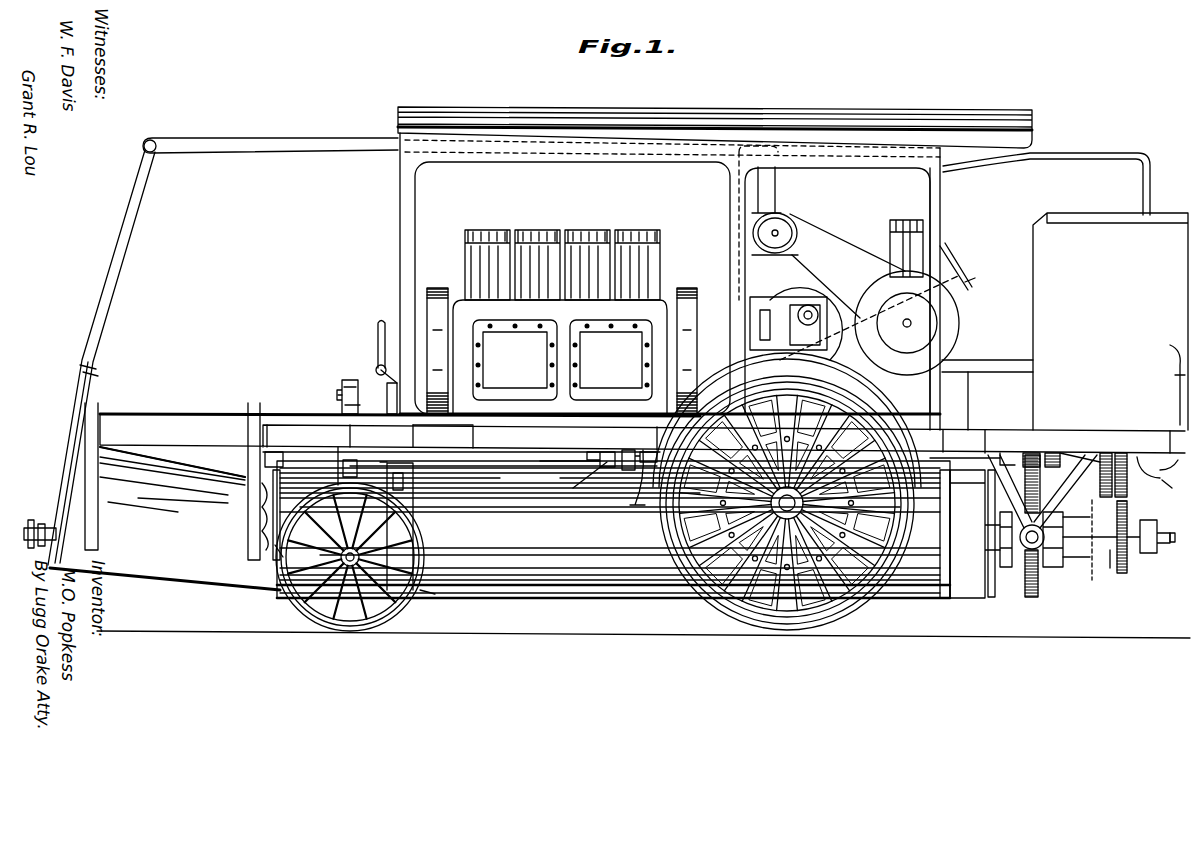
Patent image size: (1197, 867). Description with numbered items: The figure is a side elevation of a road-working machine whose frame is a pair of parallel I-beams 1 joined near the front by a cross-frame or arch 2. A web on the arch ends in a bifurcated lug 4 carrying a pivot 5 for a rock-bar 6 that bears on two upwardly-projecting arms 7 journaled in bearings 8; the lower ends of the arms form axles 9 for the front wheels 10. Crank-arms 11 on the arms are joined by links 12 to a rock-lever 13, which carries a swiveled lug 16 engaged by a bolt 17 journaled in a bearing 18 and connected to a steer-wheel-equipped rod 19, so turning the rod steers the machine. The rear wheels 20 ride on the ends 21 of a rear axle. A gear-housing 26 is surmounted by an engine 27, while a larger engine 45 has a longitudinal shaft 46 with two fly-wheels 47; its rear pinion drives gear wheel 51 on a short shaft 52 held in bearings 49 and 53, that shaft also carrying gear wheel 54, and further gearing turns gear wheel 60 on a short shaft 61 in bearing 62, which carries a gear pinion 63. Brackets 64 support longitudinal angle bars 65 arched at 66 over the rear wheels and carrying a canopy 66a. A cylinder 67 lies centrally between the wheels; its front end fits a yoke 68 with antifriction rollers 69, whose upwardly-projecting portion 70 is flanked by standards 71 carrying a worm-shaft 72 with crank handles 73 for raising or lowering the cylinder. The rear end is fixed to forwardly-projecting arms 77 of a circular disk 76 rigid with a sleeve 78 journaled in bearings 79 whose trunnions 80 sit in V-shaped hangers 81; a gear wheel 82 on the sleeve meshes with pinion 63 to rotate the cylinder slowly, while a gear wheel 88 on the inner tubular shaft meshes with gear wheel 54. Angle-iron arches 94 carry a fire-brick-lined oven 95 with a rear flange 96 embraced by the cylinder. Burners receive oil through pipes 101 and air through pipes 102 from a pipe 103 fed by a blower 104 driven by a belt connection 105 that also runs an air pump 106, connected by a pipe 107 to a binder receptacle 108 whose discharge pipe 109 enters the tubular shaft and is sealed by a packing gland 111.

The I-beams 1 is at (200, 432).
The cross-frame or arch 2 is at (340, 450).
The bifurcated lug 4 is at (345, 383).
The pivot 5 is at (338, 395).
The rock-bar 6 is at (348, 380).
The upwardly-projecting arms 7 is at (342, 406).
The bearings 8 is at (275, 557).
The axles 9 is at (292, 600).
The front wheels 10 is at (358, 632).
The crank-arms 11 is at (403, 482).
The links 12 is at (487, 473).
The rock-lever 13 is at (573, 488).
The swiveled lug 16 is at (608, 452).
The bolt 17 is at (570, 458).
The bearing 18 is at (635, 505).
The steer-wheel-equipped rod 19 is at (958, 268).
The rear wheels 20 is at (733, 622).
The ends of axle 21 is at (789, 519).
The gear-housing 26 is at (870, 323).
The engine 27 is at (912, 220).
The engine 45 is at (560, 322).
The engine shaft 46 is at (1000, 360).
The fly-wheels 47 is at (686, 288).
The bearing 49 is at (1095, 462).
The gear wheel 51 is at (1106, 456).
The short shaft 52 is at (1157, 470).
The bearing 53 is at (1171, 491).
The gear wheel 54 is at (1176, 378).
The gear wheel 60 is at (1121, 456).
The short shaft 61 is at (1052, 456).
The bearing 62 is at (1008, 456).
The gear pinion 63 is at (1002, 453).
The brackets 64 is at (1165, 430).
The angle bars 65 is at (963, 425).
The arched portion of angle bars 66 is at (732, 362).
The canopy 66a is at (668, 135).
The cylinder 67 is at (600, 575).
The yoke 68 is at (404, 542).
The antifriction rollers 69 is at (423, 596).
The upwardly-projecting portion 70 is at (418, 445).
The standards 71 is at (390, 405).
The worm-shaft 72 is at (378, 370).
The crank handles 73 is at (382, 318).
The circular disk 76 is at (987, 598).
The forwardly-projecting arms 77 is at (967, 545).
The sleeve 78 is at (1110, 568).
The bearings 79 is at (1055, 567).
The trunnions 80 is at (1036, 550).
The V-shaped hangers 81 is at (990, 462).
The gear wheel 82 is at (1033, 600).
The gear wheel 88 is at (1125, 573).
The angle-iron arches 94 is at (252, 408).
The oven 95 is at (152, 518).
The flange 96 is at (268, 513).
The pipes 101 is at (100, 370).
The pipes 102 is at (116, 290).
The pipe 103 is at (318, 150).
The blower 104 is at (778, 230).
The belt connection 105 is at (848, 250).
The air pump 106 is at (790, 298).
The pipe 107 is at (1088, 152).
The binder receptacle 108 is at (1092, 222).
The discharge pipe 109 is at (1150, 520).
The packing gland 111 is at (1168, 542).